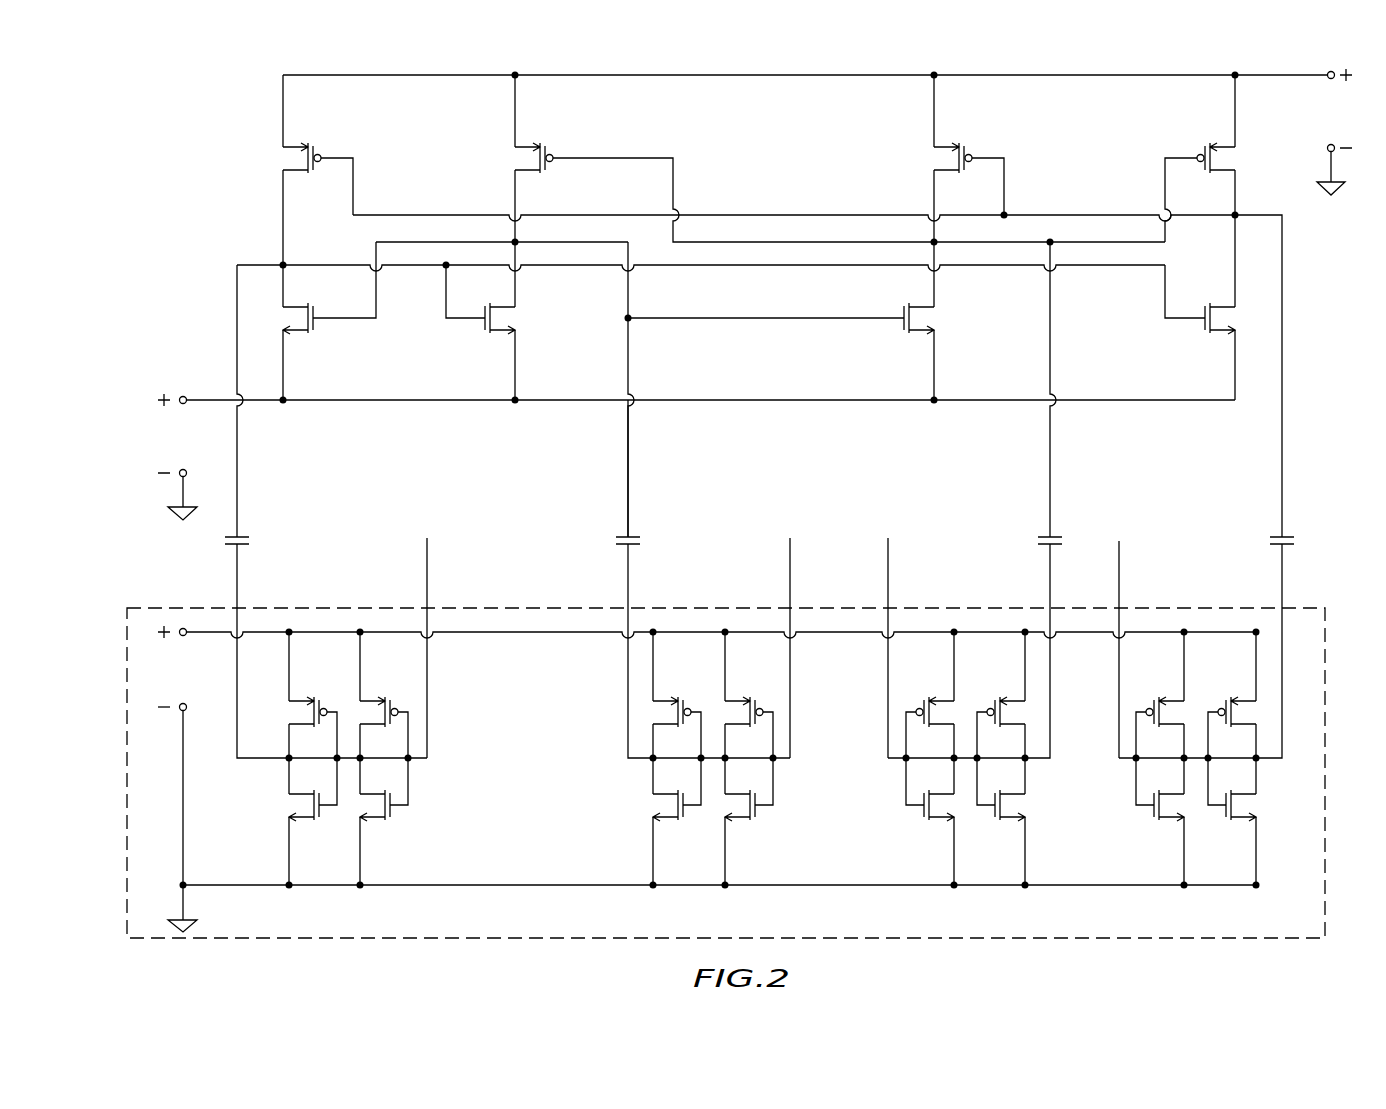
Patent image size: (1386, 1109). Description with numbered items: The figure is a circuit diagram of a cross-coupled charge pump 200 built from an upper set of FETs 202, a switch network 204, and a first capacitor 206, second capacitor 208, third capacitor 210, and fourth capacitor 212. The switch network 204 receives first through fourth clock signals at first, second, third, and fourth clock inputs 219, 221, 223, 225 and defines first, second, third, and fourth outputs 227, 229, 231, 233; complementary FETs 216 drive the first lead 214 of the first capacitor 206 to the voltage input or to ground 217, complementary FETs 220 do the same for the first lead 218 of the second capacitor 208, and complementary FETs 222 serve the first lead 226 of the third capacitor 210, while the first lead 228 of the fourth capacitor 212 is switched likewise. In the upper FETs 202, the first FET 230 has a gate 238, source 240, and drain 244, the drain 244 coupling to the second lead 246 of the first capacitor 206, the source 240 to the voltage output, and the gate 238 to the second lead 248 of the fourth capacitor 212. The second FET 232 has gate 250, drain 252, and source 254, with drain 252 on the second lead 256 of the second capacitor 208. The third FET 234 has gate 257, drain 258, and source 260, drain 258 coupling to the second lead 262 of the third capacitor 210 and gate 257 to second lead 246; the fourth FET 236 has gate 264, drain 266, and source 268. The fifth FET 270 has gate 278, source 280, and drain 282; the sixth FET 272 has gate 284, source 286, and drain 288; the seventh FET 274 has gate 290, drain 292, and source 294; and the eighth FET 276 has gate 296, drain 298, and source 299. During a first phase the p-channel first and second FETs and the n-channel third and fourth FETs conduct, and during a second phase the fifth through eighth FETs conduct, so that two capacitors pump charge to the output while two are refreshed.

The cross-coupled charge pump 200 is at (166, 118).
The upper set of FETs 202 is at (184, 235).
The switch network 204 is at (156, 603).
The first capacitor 206 is at (251, 529).
The second capacitor 208 is at (1039, 527).
The third capacitor 210 is at (618, 529).
The fourth capacitor 212 is at (1266, 522).
The first lead of the first capacitor 214 is at (236, 560).
The complementary FETs 216 is at (394, 686).
The ground 217 is at (198, 923).
The first lead of the second capacitor 218 is at (1051, 553).
The first clock input 219 is at (428, 605).
The complementary FETs 220 is at (906, 815).
The second clock input 221 is at (891, 605).
The complementary FETs 222 is at (750, 690).
The third clock input 223 is at (793, 605).
The fourth clock input 225 is at (1122, 605).
The first lead of the third capacitor 226 is at (628, 562).
The first output 227 is at (239, 605).
The first lead of the fourth capacitor 228 is at (1283, 568).
The second output 229 is at (1050, 605).
The first FET 230 is at (320, 136).
The third output 231 is at (627, 605).
The second FET 232 is at (981, 137).
The fourth output 233 is at (1280, 605).
The third FET 234 is at (495, 340).
The fourth FET 236 is at (1222, 342).
The gate of the first FET 238 is at (345, 157).
The source of the first FET 240 is at (283, 88).
The drain of the first FET 244 is at (283, 183).
The second lead of the first capacitor 246 is at (239, 512).
The second lead of the fourth capacitor 248 is at (1279, 497).
The gate of the second FET 250 is at (988, 157).
The drain of the second FET 252 is at (933, 192).
The source of the second FET 254 is at (933, 122).
The second lead of the second capacitor 256 is at (1048, 490).
The gate of the third FET 257 is at (465, 322).
The drain of the third FET 258 is at (516, 285).
The source of the third FET 260 is at (516, 377).
The second lead of the third capacitor 262 is at (632, 532).
The gate of the fourth FET 264 is at (1175, 325).
The drain of the fourth FET 266 is at (1237, 263).
The source of the fourth FET 268 is at (1237, 372).
The fifth FET 270 is at (549, 136).
The sixth FET 272 is at (1191, 140).
The seventh FET 274 is at (315, 341).
The eighth FET 276 is at (908, 342).
The gate of the fifth FET 278 is at (565, 157).
The source of the fifth FET 280 is at (514, 121).
The drain of the fifth FET 282 is at (514, 195).
The gate of the sixth FET 284 is at (1193, 157).
The source of the sixth FET 286 is at (1238, 93).
The drain of the sixth FET 288 is at (1238, 186).
The gate of the seventh FET 290 is at (337, 322).
The drain of the seventh FET 292 is at (286, 280).
The source of the seventh FET 294 is at (283, 333).
The gate of the eighth FET 296 is at (873, 322).
The drain of the eighth FET 298 is at (936, 287).
The source of the eighth FET 299 is at (937, 352).